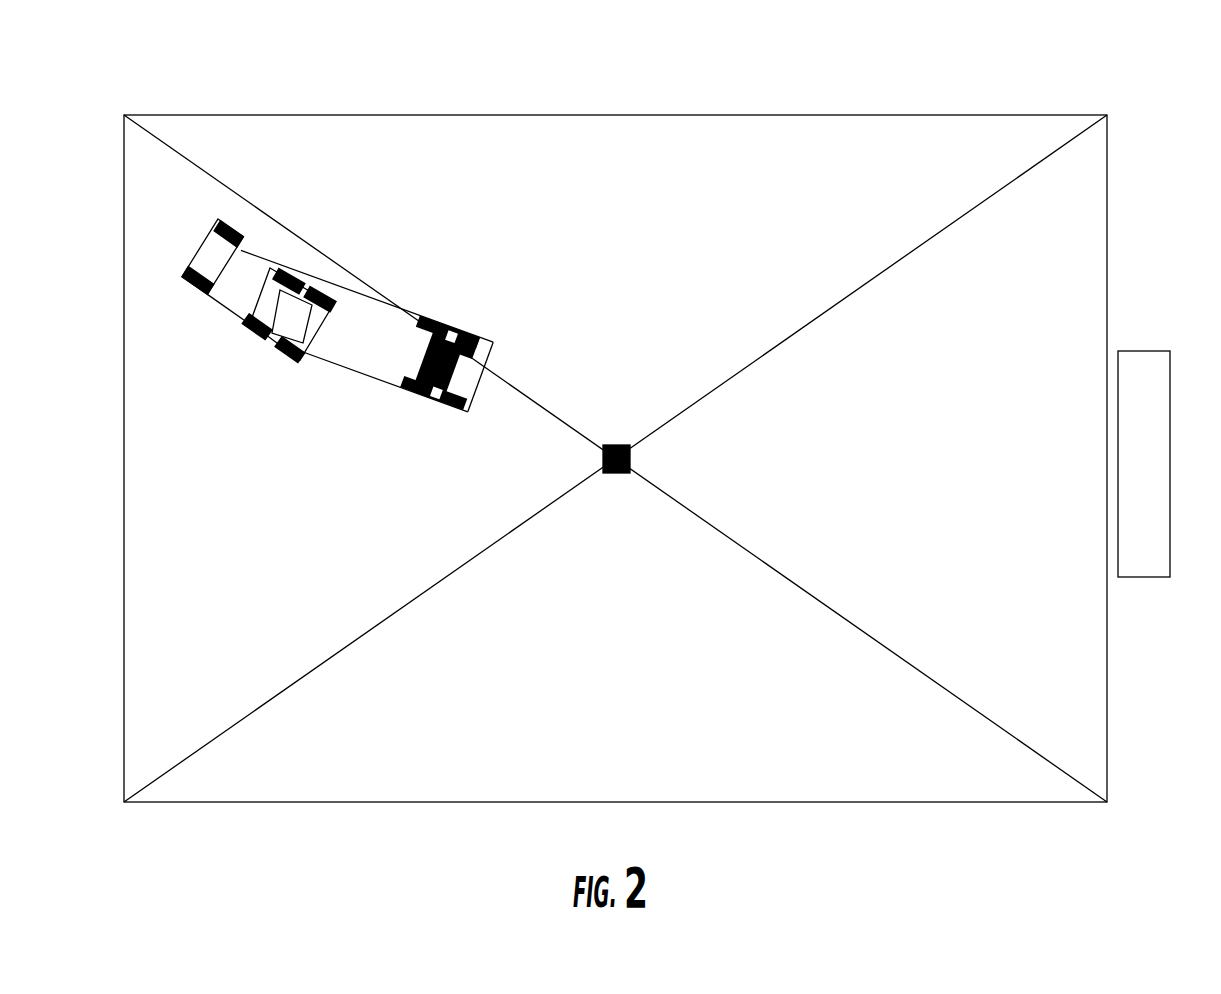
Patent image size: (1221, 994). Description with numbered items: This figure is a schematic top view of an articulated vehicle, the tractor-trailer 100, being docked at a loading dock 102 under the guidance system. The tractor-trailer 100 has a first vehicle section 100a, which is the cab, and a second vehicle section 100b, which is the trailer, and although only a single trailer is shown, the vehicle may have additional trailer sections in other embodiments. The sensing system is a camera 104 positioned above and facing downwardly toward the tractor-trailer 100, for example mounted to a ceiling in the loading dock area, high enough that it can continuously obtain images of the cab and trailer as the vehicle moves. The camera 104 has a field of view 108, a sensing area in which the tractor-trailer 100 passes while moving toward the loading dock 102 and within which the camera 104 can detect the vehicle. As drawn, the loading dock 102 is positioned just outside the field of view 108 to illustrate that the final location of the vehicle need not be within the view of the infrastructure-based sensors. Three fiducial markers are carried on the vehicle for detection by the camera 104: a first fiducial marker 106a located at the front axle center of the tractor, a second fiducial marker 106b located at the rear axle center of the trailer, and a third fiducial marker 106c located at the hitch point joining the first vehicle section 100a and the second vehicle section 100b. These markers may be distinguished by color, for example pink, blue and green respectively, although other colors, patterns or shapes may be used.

The tractor-trailer 100 is at (183, 237).
The first vehicle section 100a is at (241, 285).
The second vehicle section 100b is at (366, 355).
The loading dock 102 is at (1145, 365).
The camera 104 is at (630, 458).
The first fiducial marker 106a is at (215, 277).
The second fiducial marker 106b is at (423, 393).
The third fiducial marker 106c is at (290, 332).
The field of view 108 is at (900, 113).